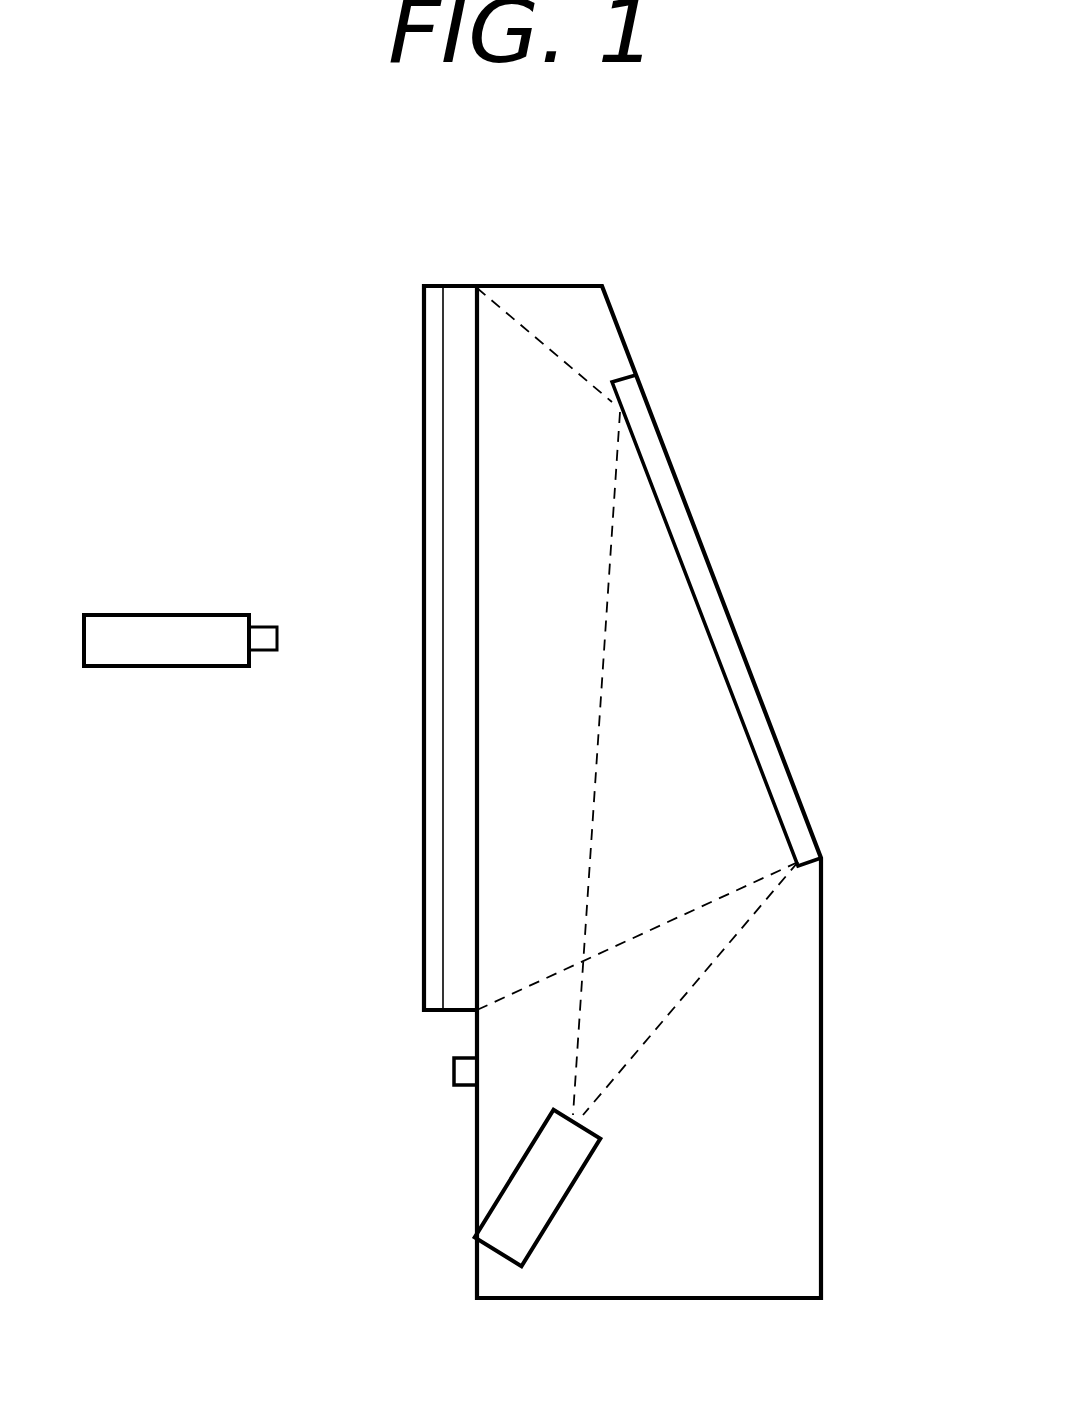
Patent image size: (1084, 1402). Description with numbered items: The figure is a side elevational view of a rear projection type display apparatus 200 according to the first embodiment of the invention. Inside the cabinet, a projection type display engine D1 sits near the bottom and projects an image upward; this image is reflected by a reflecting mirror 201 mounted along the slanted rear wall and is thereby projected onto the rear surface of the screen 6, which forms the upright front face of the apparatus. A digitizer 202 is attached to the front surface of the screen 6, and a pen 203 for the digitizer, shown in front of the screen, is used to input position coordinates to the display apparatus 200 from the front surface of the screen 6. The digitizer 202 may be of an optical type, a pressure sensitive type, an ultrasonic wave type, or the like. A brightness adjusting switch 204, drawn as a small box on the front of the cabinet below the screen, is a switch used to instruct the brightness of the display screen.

The rear projection type display apparatus 200 is at (836, 287).
The reflecting mirror 201 is at (712, 596).
The digitizer 202 is at (432, 346).
The screen 6 is at (460, 298).
The pen 203 is at (136, 635).
The brightness adjusting switch 204 is at (463, 1072).
The projection type display engine D1 is at (510, 1207).